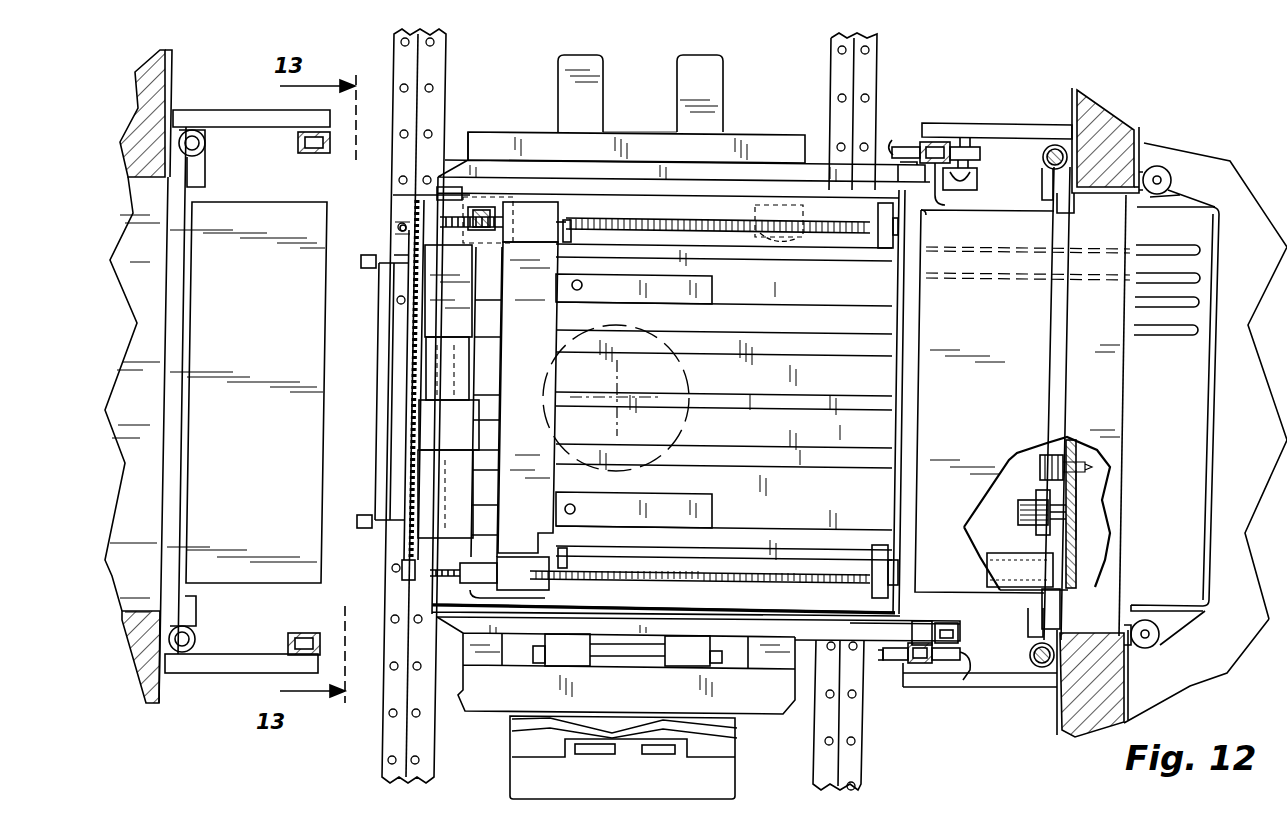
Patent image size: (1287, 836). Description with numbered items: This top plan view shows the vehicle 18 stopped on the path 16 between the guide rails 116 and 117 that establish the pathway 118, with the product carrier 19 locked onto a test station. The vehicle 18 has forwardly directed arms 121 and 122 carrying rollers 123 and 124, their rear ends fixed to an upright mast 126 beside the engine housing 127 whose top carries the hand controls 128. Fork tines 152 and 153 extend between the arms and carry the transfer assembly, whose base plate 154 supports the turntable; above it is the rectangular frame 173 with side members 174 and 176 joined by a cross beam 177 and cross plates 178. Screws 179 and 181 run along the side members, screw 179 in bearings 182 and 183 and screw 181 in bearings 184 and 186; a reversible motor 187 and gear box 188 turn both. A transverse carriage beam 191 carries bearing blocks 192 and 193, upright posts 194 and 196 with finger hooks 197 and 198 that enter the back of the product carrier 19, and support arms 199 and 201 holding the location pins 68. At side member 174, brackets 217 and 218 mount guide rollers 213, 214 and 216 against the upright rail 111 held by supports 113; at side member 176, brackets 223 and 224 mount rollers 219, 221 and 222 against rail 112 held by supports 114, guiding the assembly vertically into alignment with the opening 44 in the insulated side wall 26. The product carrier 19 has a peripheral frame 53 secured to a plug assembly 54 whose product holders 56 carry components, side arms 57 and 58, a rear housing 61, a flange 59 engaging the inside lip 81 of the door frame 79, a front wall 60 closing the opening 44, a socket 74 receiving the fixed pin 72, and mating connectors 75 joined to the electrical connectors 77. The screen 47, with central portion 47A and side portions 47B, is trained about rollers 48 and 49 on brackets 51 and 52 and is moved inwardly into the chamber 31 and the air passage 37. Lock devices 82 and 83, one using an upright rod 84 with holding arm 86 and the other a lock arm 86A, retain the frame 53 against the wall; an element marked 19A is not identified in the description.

The path 16 is at (415, 405).
The vehicle 18 is at (421, 406).
The guide rail 116 is at (446, 57).
The guide rail 117 is at (830, 48).
The pathway 118 is at (640, 80).
The tine 152 is at (558, 80).
The tine 153 is at (703, 60).
The base plate 154 is at (773, 140).
The side member 174 is at (480, 168).
The cross beam 177 is at (393, 192).
The bearing block 192 is at (497, 207).
The screw 179 is at (637, 216).
The rollers 124 is at (752, 222).
The upright post 194 is at (540, 223).
The finger hook 197 is at (575, 233).
The bearing 182 is at (429, 236).
The rollers 123 is at (500, 262).
The location pins 68 is at (582, 286).
The support arm 199 is at (714, 287).
The cross plate 178 is at (872, 250).
The bearing 183 is at (885, 250).
The gear box 188 is at (447, 368).
The carriage beam 191 is at (528, 397).
The reversible motor 187 is at (449, 425).
The bearing 184 is at (422, 560).
The upright post 196 is at (528, 397).
The support arm 201 is at (713, 510).
The bearing 186 is at (875, 548).
The finger hook 198 is at (570, 556).
The bearing block 193 is at (511, 582).
The screw 181 is at (758, 582).
The frame 173 is at (427, 626).
The arm 121 is at (616, 682).
The side member 176 is at (528, 622).
The mast 126 is at (620, 696).
The arm 122 is at (616, 682).
The engine housing 127 is at (598, 757).
The hand controls 128 is at (642, 753).
The guide roller 213 is at (900, 135).
The rail 111 is at (937, 142).
The supports 113 is at (972, 128).
The lock device 82 is at (1044, 133).
The upright rod 84 is at (1043, 158).
The side wall 26 is at (1095, 113).
The bracket 51 is at (1179, 153).
The roller 48 is at (1165, 172).
The side portion of screen 47B is at (1180, 196).
The guide roller 214 is at (980, 155).
The bracket 217 is at (893, 165).
The bracket 218 is at (977, 181).
The third roller 216 is at (957, 190).
The holding arm 86 is at (1042, 192).
The product carrier 19 is at (1022, 235).
The opening 44 is at (1090, 195).
The inside lip 81 is at (1122, 198).
The side arm 58 is at (1197, 409).
The sheet member 47 is at (1232, 280).
The product holders 56 is at (1152, 335).
The frame 53 is at (1050, 372).
The plug assembly 54 is at (1118, 388).
The central vertical portion of screen 47A is at (1217, 392).
The passage 37 is at (1253, 523).
The housing 61 is at (765, 398).
The electrical connectors 77 is at (1076, 480).
The mating connectors 75 is at (1013, 512).
The socket 74 is at (985, 559).
The flange 59 is at (1122, 522).
The front wall 60 is at (1108, 556).
The side arm 57 is at (1197, 409).
The fixed pin 72 is at (1020, 573).
The third roller 222 is at (920, 620).
The bracket 224 is at (940, 624).
The bracket 223 is at (876, 626).
The first roller 219 is at (882, 656).
The supports 114 is at (964, 687).
The rail 112 is at (919, 665).
The second roller 221 is at (965, 675).
The lock device 83 is at (1020, 668).
The lock arm 86A is at (1028, 632).
The door frame 79 is at (1098, 628).
The roller 49 is at (1154, 656).
The bracket 52 is at (1128, 646).
The chamber 31 is at (1243, 652).
The left housing 19A is at (249, 208).